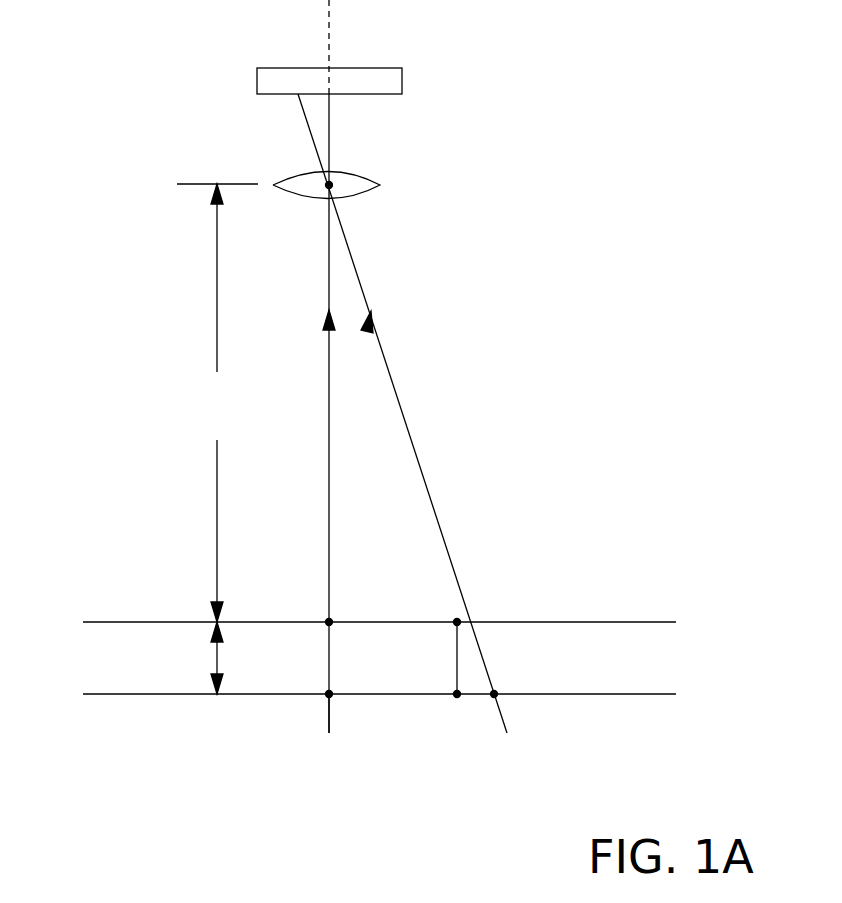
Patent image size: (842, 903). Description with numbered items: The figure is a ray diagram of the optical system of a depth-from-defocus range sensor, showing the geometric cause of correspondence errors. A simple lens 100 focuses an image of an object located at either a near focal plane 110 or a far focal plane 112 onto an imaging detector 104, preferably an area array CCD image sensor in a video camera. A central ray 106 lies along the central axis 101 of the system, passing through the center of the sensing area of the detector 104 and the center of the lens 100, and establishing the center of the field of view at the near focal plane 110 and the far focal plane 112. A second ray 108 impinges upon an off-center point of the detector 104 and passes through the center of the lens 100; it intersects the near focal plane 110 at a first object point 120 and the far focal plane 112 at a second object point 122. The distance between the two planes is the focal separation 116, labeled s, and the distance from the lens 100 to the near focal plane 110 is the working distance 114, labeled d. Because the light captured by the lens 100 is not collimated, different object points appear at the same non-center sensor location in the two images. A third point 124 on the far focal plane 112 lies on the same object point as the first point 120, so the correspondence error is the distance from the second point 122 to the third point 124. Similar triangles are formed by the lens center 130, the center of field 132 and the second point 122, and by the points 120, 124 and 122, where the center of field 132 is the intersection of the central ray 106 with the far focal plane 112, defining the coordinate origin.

The lens 100 is at (380, 185).
The central axis 101 is at (333, 14).
The imaging detector 104 is at (402, 80).
The central ray 106 is at (329, 357).
The ray 108 is at (410, 428).
The near focal plane 110 is at (636, 616).
The far focal plane 112 is at (688, 678).
The working distance 114 is at (219, 403).
The focal separation 116 is at (217, 657).
The point P(x,y) 120 is at (468, 620).
The point P(u,v) 122 is at (494, 694).
The point P(u',v') 124 is at (457, 696).
The lens center point 130 is at (329, 185).
The center of field 132 is at (318, 699).